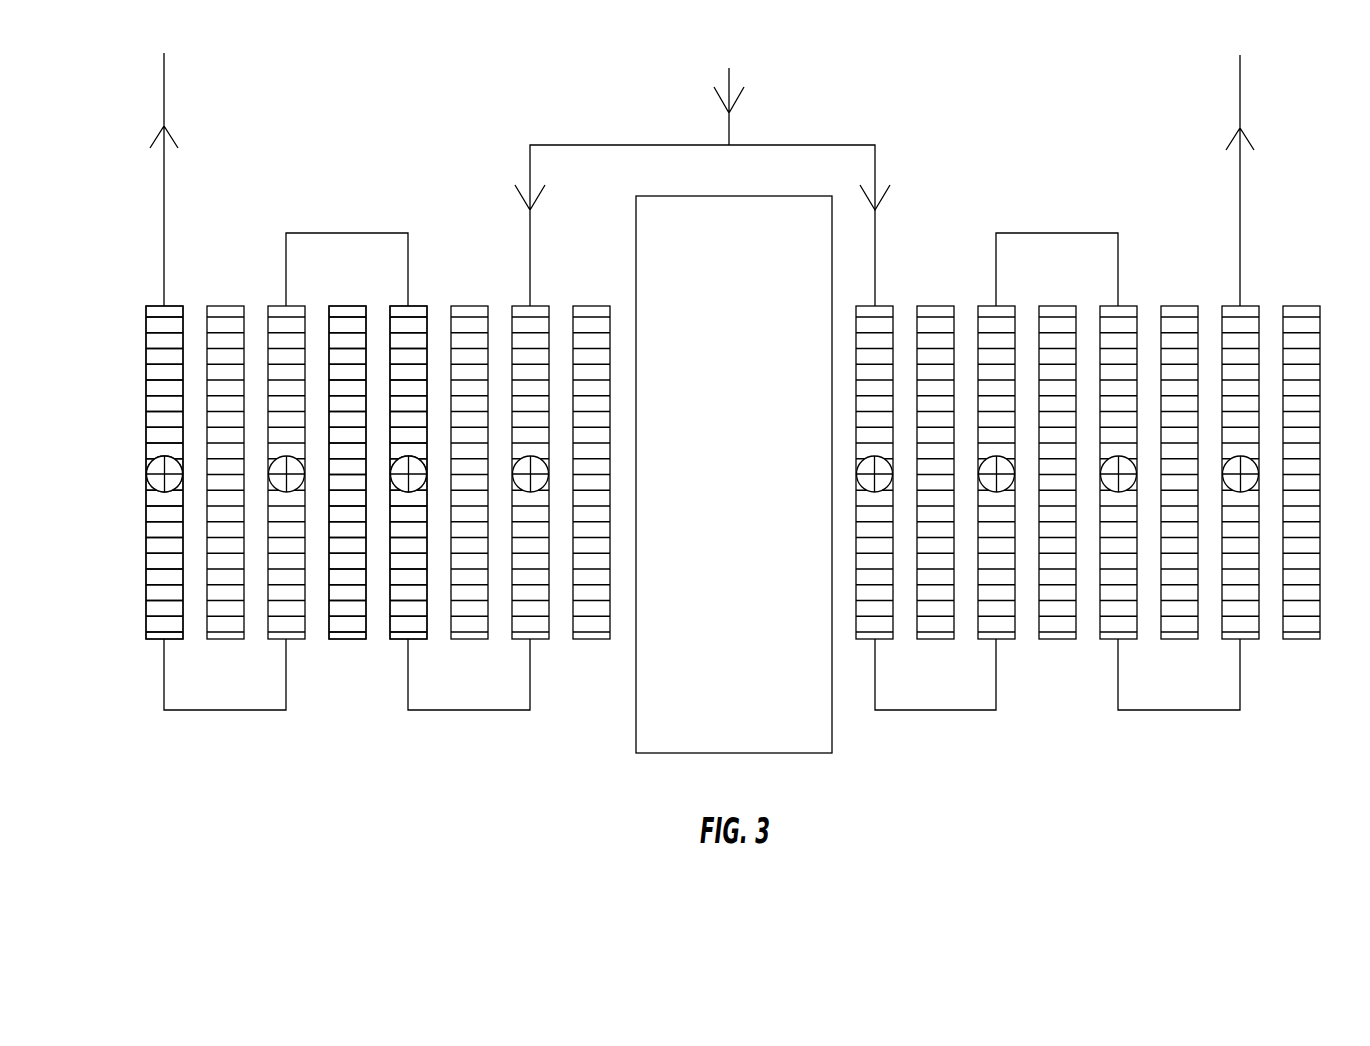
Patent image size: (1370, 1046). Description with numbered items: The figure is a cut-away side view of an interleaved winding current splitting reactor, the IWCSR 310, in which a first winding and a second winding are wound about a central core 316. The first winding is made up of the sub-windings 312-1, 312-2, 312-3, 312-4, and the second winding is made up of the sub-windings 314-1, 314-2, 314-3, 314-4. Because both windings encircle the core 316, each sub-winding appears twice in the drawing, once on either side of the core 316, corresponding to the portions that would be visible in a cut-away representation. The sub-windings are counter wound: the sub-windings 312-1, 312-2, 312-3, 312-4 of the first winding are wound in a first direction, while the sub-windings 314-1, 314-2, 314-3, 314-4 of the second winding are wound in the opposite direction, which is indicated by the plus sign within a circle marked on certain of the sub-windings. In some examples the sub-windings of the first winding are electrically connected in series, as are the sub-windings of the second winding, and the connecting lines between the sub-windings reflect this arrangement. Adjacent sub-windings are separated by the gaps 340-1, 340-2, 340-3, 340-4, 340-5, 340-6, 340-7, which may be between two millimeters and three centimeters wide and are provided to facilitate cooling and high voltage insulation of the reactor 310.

The IWCSR 310 is at (727, 434).
The core 316 is at (753, 485).
The sub-winding 312-1 is at (587, 639).
The sub-winding 312-2 is at (470, 306).
The sub-winding 312-3 is at (347, 639).
The sub-winding 312-4 is at (222, 306).
The sub-winding 314-1 is at (537, 306).
The sub-winding 314-2 is at (398, 639).
The sub-winding 314-3 is at (275, 306).
The sub-winding 314-4 is at (155, 639).
The gap 340-1 is at (562, 622).
The gap 340-2 is at (502, 307).
The gap 340-3 is at (438, 392).
The gap 340-4 is at (380, 637).
The gap 340-5 is at (315, 645).
The gap 340-6 is at (260, 611).
The gap 340-7 is at (192, 302).